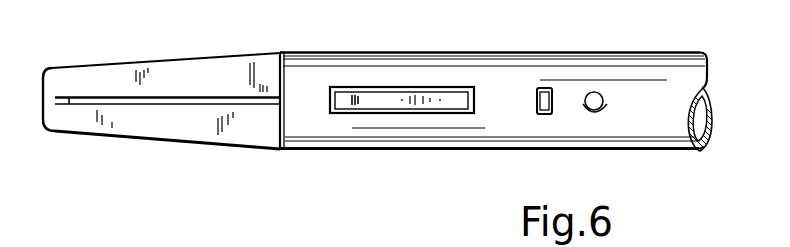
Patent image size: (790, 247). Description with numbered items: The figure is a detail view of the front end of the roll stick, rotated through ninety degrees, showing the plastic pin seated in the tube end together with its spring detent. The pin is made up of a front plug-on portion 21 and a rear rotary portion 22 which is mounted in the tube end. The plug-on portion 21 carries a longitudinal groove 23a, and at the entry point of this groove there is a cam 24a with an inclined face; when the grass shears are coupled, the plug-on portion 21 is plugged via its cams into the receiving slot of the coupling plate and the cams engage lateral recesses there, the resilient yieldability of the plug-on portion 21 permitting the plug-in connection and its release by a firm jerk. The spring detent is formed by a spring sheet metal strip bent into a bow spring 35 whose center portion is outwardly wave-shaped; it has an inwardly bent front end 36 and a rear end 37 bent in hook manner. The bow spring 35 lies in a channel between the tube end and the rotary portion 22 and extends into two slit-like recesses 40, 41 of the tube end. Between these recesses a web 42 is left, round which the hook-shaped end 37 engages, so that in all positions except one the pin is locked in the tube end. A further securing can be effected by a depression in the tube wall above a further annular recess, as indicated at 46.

The plug-on portion 21 is at (280, 166).
The rotary portion 22 is at (309, 139).
The longitudinal groove 23a is at (215, 100).
The cam 24a is at (64, 96).
The bow spring 35 is at (416, 96).
The inwardly bent front end 36 is at (351, 97).
The hook-shaped rear end 37 is at (542, 88).
The slitlike recess 40 is at (407, 113).
The slitlike recess 41 is at (549, 114).
The web 42 is at (503, 108).
The depression 46 is at (597, 98).